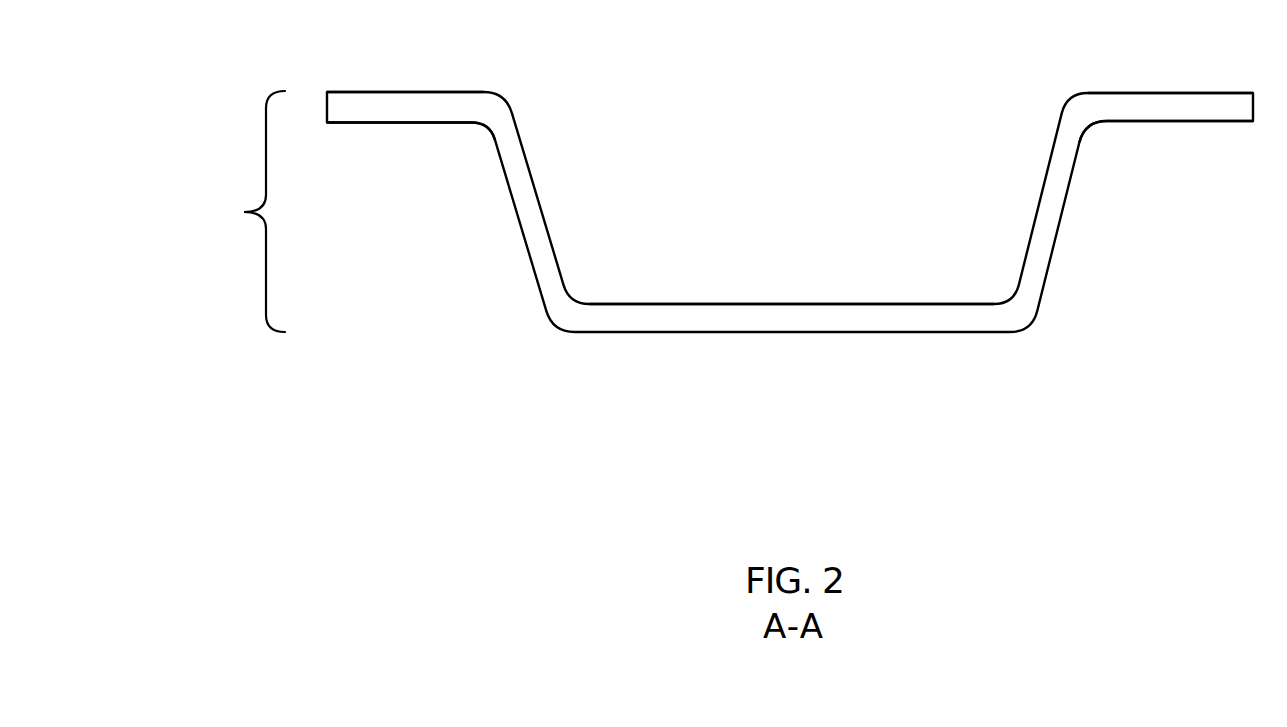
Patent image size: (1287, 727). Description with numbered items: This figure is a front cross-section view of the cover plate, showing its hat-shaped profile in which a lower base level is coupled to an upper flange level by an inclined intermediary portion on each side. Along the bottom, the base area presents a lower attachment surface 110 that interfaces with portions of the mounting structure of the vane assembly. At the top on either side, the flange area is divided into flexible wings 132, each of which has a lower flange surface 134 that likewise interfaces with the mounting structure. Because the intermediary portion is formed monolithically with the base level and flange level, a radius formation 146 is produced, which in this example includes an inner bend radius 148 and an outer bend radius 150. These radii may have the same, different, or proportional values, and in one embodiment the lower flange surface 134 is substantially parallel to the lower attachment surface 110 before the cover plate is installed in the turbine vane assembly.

The lower attachment surface 110 is at (952, 334).
The flexible wings 132 is at (414, 85).
The lower flange surface 134 is at (407, 124).
The radius formation 146 is at (242, 211).
The inner bend radius 148 is at (996, 294).
The outer bend radius 150 is at (477, 139).